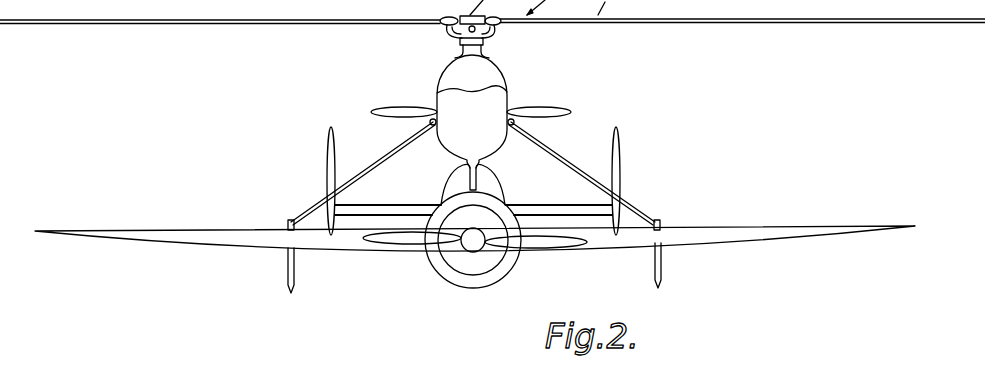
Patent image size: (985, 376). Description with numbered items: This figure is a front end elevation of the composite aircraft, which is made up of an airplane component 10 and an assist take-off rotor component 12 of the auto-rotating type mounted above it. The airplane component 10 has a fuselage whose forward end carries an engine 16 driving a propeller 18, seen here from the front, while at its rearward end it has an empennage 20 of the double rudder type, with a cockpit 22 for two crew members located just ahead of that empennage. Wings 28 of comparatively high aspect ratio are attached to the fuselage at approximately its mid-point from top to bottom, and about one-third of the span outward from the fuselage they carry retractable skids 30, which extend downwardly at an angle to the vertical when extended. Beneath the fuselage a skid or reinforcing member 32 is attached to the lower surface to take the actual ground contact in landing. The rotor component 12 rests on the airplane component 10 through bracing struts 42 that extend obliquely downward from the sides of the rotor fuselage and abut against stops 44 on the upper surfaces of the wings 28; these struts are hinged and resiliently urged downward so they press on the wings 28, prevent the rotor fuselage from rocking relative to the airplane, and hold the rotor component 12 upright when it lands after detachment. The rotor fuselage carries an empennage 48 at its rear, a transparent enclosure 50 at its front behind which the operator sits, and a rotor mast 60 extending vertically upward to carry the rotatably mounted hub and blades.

The airplane component 10 is at (447, 287).
The take-off rotor component 12 is at (543, 72).
The engine 16 is at (493, 268).
The propeller 18 is at (400, 245).
The empennage 20 is at (622, 158).
The cockpit 22 is at (490, 187).
The wings 28 is at (225, 232).
The retractable skids 30 is at (286, 280).
The skid or reinforcing member 32 is at (476, 290).
The bracing struts 42 is at (382, 157).
The stops 44 is at (285, 222).
The empennage 48 is at (565, 108).
The transparent enclosure 50 is at (438, 80).
The rotor mast 60 is at (478, 52).